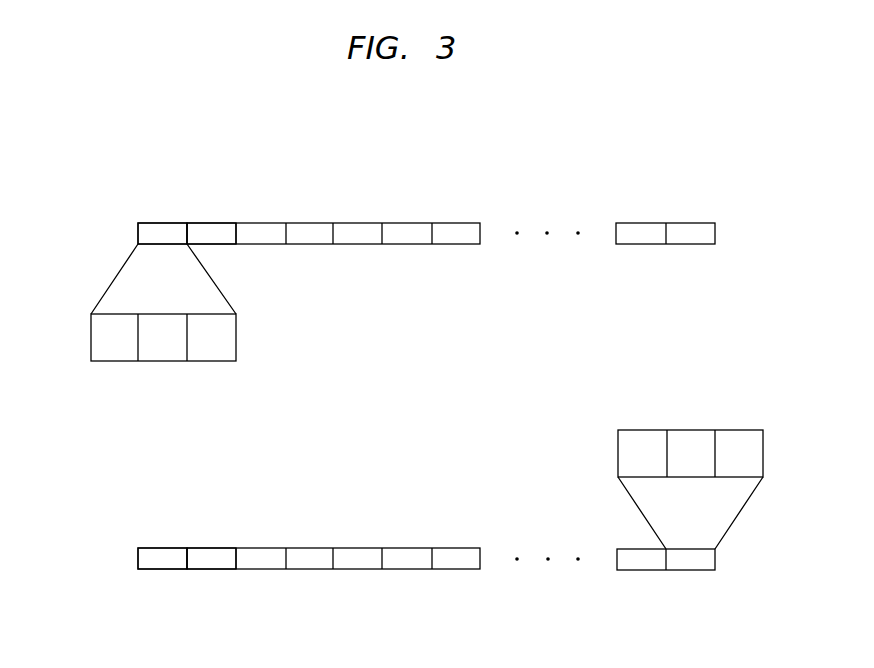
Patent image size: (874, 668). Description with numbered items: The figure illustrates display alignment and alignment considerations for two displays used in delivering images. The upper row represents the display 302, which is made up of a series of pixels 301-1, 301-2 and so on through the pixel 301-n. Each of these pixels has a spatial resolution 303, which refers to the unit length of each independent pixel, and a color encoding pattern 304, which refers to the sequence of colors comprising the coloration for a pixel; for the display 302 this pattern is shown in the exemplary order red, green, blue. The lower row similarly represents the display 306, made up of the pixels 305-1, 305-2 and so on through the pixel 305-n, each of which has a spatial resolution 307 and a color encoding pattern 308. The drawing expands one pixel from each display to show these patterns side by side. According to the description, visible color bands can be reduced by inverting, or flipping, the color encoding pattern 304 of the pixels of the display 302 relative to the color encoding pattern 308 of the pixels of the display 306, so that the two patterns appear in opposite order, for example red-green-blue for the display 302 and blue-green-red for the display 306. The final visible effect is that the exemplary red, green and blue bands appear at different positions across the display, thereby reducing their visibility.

The pixel 301-1 is at (148, 222).
The pixel 301-2 is at (228, 222).
The pixel 301-n is at (683, 222).
The display 302 is at (138, 242).
The spatial resolution 303 is at (236, 396).
The color encoding pattern 304 is at (91, 355).
The pixel 305-1 is at (148, 570).
The pixel 305-2 is at (228, 570).
The pixel 305-n is at (690, 571).
The display 306 is at (138, 562).
The spatial resolution 307 is at (763, 397).
The color encoding pattern 308 is at (763, 441).